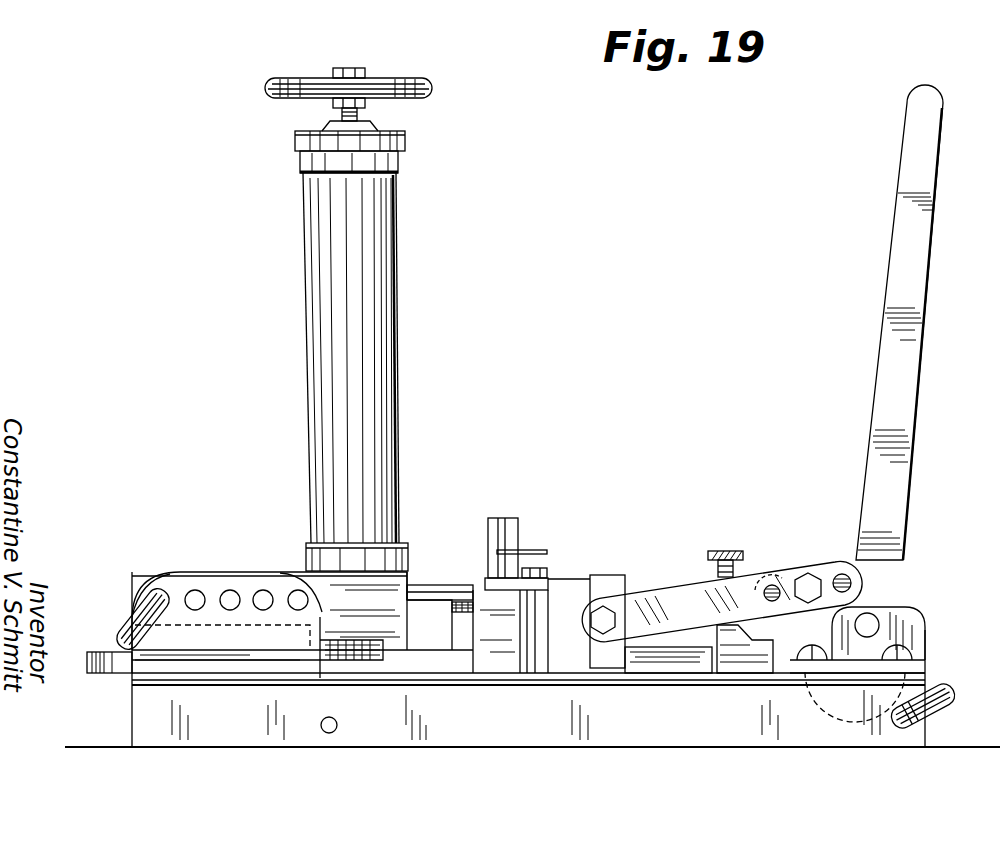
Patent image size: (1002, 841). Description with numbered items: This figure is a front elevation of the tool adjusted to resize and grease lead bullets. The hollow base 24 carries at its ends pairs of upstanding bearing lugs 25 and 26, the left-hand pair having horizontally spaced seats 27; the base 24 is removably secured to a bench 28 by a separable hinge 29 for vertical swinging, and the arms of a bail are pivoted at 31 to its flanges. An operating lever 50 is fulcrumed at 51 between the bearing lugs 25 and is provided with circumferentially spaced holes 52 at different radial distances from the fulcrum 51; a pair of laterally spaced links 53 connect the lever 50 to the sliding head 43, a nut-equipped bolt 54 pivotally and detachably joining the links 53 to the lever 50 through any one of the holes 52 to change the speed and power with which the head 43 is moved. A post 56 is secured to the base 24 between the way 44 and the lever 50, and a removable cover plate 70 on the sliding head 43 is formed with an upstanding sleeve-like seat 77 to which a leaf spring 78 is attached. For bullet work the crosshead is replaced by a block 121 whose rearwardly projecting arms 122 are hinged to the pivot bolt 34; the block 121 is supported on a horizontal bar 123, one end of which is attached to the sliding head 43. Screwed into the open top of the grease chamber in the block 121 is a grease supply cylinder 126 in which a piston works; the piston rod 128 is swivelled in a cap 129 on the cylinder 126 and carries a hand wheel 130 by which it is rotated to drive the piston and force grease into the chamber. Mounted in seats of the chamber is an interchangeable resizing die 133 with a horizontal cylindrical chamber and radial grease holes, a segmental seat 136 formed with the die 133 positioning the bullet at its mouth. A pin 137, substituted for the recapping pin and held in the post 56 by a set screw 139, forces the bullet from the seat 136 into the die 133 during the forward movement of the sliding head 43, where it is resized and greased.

The hollow base 24 is at (142, 725).
The bearing lugs 25 is at (908, 612).
The bearing lugs 26 is at (136, 600).
The seats 27 is at (292, 592).
The bench 28 is at (982, 745).
The separable hinge 29 is at (893, 722).
The bail pivot 31 is at (320, 723).
The pivot bolt 34 is at (157, 593).
The sliding head 43 is at (612, 593).
The way 44 is at (690, 668).
The operating lever 50 is at (880, 455).
The fulcrum 51 is at (872, 618).
The holes 52 is at (772, 603).
The links 53 is at (692, 582).
The nut-equipped bolt 54 is at (813, 568).
The post 56 is at (714, 640).
The cover plate 70 is at (549, 583).
The sleeve-like seat 77 is at (488, 545).
The leaf spring 78 is at (525, 552).
The block 121 is at (408, 640).
The arms 122 is at (148, 572).
The horizontal bar 123 is at (113, 673).
The grease supply cylinder 126 is at (399, 398).
The piston rod 128 is at (358, 114).
The cap 129 is at (405, 138).
The hand wheel 130 is at (432, 88).
The resizing die 133 is at (412, 572).
The segmental seat 136 is at (423, 603).
The pin 137 is at (441, 582).
The set screw 139 is at (732, 552).